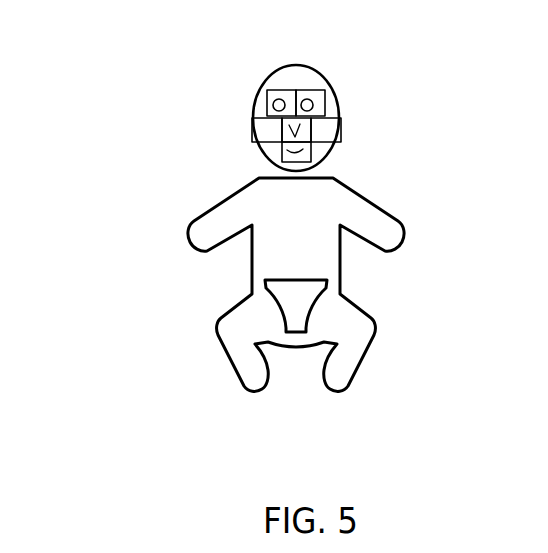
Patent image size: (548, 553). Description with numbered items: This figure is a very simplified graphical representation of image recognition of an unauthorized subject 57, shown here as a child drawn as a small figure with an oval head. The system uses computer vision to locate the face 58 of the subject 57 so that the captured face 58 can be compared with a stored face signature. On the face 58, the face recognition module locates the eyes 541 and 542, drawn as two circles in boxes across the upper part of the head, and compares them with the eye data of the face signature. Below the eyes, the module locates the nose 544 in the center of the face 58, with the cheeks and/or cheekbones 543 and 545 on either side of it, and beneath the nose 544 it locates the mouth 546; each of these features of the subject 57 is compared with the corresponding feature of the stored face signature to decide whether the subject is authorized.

The face 58 is at (285, 78).
The eye 541 is at (263, 92).
The eye 542 is at (325, 95).
The cheek and/or cheekbone 543 is at (252, 132).
The nose 544 is at (312, 143).
The cheek and/or cheekbone 545 is at (341, 122).
The mouth 546 is at (282, 160).
The unauthorized subject 57 is at (268, 258).